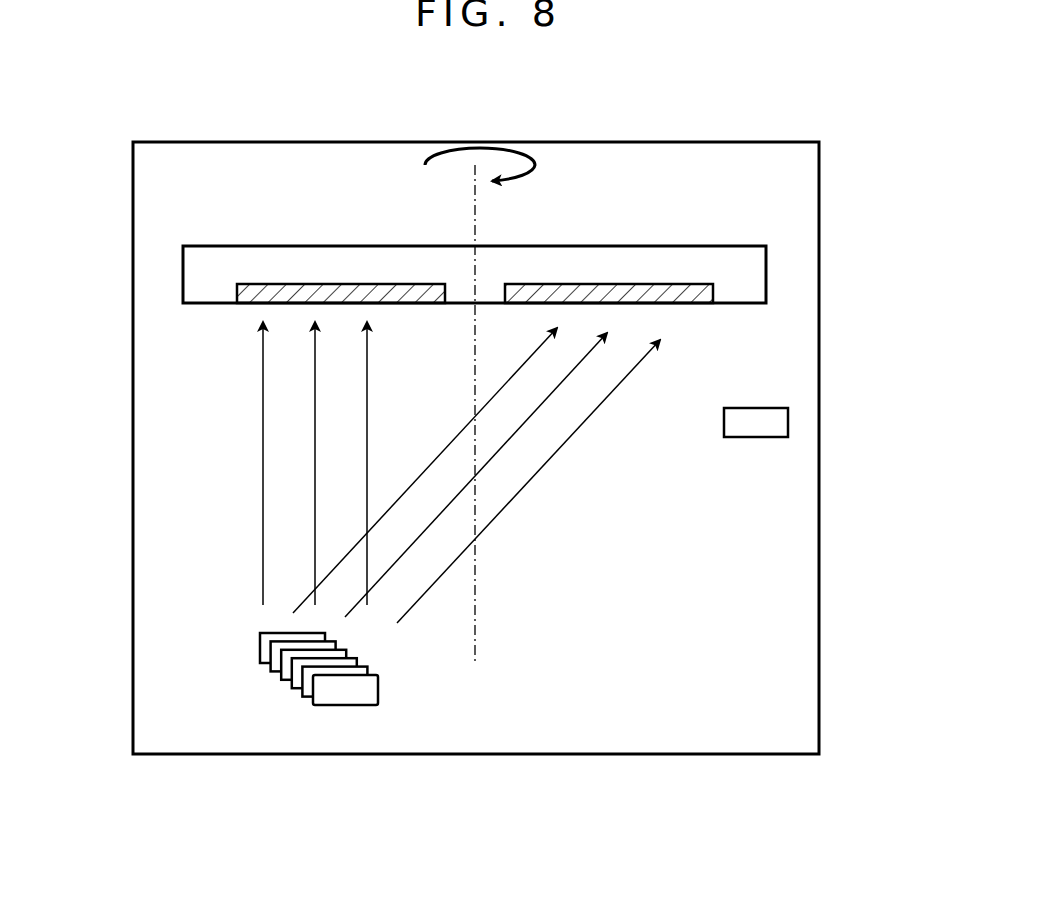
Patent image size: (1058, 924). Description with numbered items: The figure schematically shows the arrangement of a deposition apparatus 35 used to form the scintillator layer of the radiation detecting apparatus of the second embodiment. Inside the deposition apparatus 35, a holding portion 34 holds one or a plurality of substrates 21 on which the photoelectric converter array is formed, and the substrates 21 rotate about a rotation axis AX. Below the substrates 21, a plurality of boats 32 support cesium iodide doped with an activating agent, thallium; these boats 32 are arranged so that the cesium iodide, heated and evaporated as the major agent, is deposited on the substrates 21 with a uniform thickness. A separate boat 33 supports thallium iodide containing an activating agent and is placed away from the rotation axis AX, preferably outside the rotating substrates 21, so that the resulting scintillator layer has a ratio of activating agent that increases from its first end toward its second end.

The substrate 21 is at (247, 304).
The boat 32 is at (347, 703).
The boat 33 is at (788, 422).
The holding portion 34 is at (645, 246).
The deposition apparatus 35 is at (699, 756).
The rotation axis AX is at (477, 213).